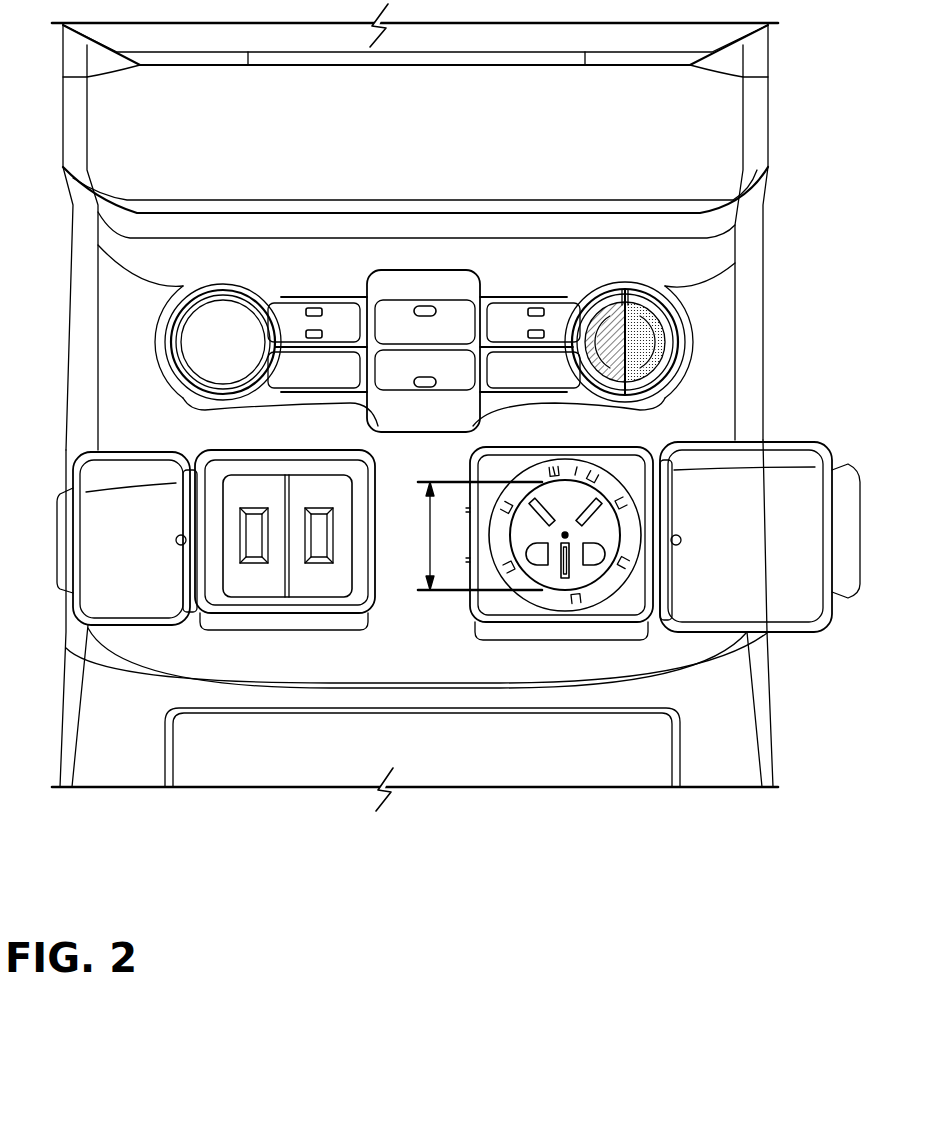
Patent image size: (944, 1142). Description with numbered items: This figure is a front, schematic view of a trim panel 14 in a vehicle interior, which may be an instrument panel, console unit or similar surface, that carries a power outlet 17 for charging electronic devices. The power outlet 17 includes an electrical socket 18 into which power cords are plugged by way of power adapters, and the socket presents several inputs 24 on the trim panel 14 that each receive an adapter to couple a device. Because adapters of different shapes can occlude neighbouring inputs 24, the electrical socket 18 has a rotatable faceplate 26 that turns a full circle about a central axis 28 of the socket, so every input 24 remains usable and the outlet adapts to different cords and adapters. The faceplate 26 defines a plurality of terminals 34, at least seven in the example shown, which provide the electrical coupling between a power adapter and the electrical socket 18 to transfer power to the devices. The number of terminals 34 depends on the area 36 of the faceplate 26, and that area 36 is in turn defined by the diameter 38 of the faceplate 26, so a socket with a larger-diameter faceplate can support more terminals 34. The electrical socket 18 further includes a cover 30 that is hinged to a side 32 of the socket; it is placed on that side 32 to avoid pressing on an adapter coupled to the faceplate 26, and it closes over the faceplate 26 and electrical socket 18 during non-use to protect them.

The trim panel 14 is at (766, 215).
The power outlet 17 is at (578, 592).
The electrical socket 18 is at (545, 445).
The input 24 is at (565, 538).
The faceplate 26 is at (573, 493).
The central axis 28 is at (567, 537).
The cover 30 is at (788, 597).
The side 32 is at (673, 480).
The terminal 34 is at (530, 518).
The area 36 is at (527, 540).
The diameter 38 is at (430, 530).